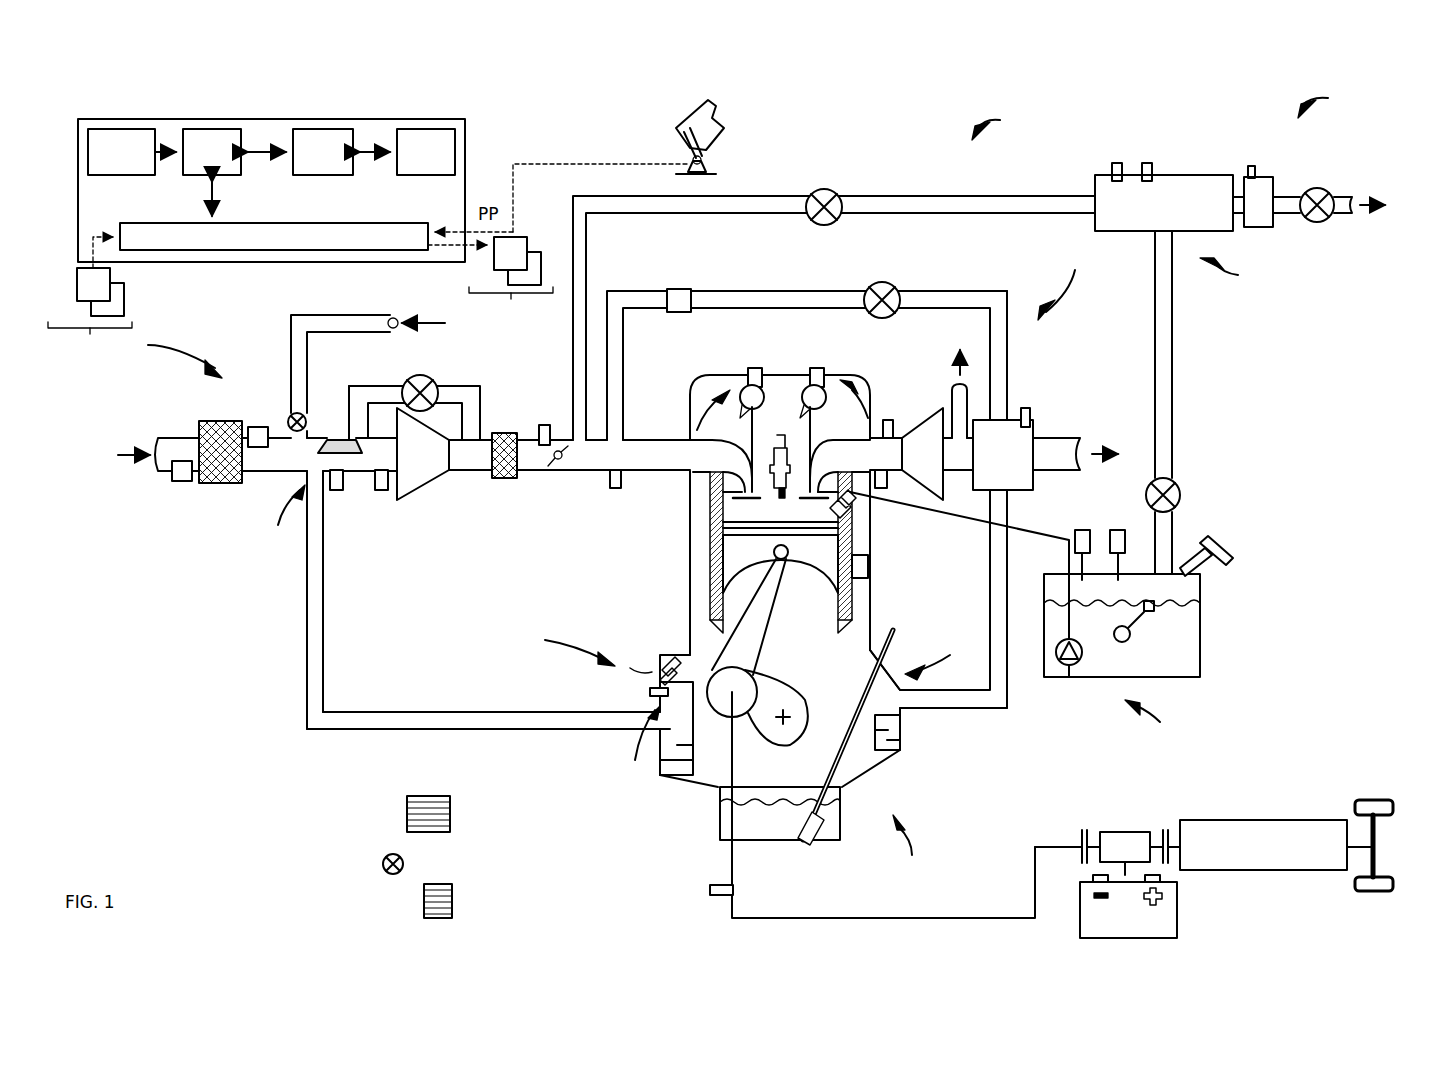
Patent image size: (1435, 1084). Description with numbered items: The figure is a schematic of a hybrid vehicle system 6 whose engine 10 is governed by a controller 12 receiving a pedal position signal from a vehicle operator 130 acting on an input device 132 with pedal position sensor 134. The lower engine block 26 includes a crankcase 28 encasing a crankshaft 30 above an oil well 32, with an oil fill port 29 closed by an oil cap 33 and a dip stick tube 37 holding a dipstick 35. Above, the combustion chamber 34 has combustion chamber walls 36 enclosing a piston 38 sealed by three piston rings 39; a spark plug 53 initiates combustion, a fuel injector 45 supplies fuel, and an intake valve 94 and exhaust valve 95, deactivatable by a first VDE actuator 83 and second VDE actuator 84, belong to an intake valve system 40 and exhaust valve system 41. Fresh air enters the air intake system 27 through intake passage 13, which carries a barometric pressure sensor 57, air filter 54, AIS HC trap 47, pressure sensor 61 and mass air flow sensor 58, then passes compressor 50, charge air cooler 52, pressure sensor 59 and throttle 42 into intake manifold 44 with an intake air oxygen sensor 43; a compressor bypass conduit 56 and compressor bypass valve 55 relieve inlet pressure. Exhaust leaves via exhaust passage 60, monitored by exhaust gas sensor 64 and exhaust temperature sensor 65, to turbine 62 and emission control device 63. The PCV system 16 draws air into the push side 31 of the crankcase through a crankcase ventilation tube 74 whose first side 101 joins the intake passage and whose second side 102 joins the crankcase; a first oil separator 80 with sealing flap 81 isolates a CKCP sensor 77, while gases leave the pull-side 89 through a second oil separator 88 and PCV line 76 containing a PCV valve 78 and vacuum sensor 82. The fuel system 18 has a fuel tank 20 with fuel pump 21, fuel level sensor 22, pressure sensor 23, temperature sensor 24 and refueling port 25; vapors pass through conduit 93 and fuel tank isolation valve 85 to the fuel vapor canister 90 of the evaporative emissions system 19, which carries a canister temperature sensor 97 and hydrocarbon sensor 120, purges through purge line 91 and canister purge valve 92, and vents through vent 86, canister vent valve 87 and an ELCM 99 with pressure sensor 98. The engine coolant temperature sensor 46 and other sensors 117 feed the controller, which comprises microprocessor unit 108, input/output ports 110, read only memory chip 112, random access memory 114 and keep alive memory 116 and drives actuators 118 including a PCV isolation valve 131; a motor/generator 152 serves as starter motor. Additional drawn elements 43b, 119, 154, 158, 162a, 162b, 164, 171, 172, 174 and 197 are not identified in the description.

The hybrid vehicle system 6 is at (1324, 101).
The engine 10 is at (1002, 126).
The controller 12 is at (458, 120).
The intake passage 13 is at (190, 438).
The positive crankcase ventilation system 16 is at (1062, 284).
The fuel system 18 is at (1156, 716).
The evaporative emissions system 19 is at (1231, 272).
The fuel tank 20 is at (1044, 670).
The fuel pump 21 is at (1080, 648).
The fuel level sensor 22 is at (1124, 642).
The pressure sensor 23 is at (1080, 530).
The temperature sensor 24 is at (1116, 530).
The refueling port 25 is at (1205, 578).
The engine block 26 is at (831, 832).
The air intake system 27 is at (185, 356).
The crankcase 28 is at (872, 768).
The oil fill port 29 is at (640, 659).
The crankshaft 30 is at (746, 682).
The push side 31 is at (617, 704).
The oil well 32 is at (778, 823).
The oil cap 33 is at (676, 656).
The combustion chamber 34 is at (700, 500).
The dipstick 35 is at (880, 655).
The combustion chamber walls 36 is at (855, 540).
The dip stick tube 37 is at (872, 690).
The piston 38 is at (710, 540).
The piston rings 39 is at (748, 520).
The intake valve system 40 is at (728, 426).
The exhaust valve system 41 is at (854, 385).
The throttle 42 is at (552, 462).
The intake air oxygen sensor 43 is at (590, 490).
The pressure sensor 43b is at (337, 490).
The intake manifold 44 is at (640, 475).
The fuel injector 45 is at (860, 505).
The engine coolant temperature sensor 46 is at (868, 570).
The air intake system hydrocarbon trap 47 is at (345, 438).
The compressor 50 is at (444, 454).
The charge air cooler 52 is at (505, 478).
The spark plug 53 is at (790, 430).
The air filter 54 is at (214, 421).
The compressor bypass valve 55 is at (418, 376).
The compressor bypass conduit 56 is at (455, 390).
The barometric pressure sensor 57 is at (182, 481).
The mass air flow sensor 58 is at (258, 427).
The pressure sensor 59 is at (545, 425).
The exhaust passage 60 is at (886, 420).
The pressure sensor 61 is at (382, 490).
The turbine 62 is at (937, 454).
The emission control device 63 is at (1063, 453).
The exhaust gas sensor 64 is at (898, 438).
The exhaust temperature sensor 65 is at (882, 488).
The crankcase ventilation tube 74 is at (550, 732).
The PCV line 76 is at (790, 308).
The CKCP sensor 77 is at (650, 692).
The PCV valve 78 is at (884, 282).
The first oil separator 80 is at (693, 728).
The sealing flap 81 is at (680, 762).
The vacuum sensor 82 is at (678, 312).
The first VDE actuator 83 is at (755, 368).
The second VDE actuator 84 is at (814, 368).
The fuel tank isolation valve 85 is at (1178, 488).
The vent 86 is at (1280, 197).
The canister vent valve 87 is at (1322, 188).
The second oil separator 88 is at (875, 722).
The pull-side 89 is at (938, 656).
The fuel vapor canister 90 is at (1164, 203).
The purge line 91 is at (998, 196).
The canister purge valve 92 is at (830, 190).
The conduit 93 is at (1172, 315).
The intake valve 94 is at (748, 460).
The exhaust valve 95 is at (812, 460).
The canister temperature sensor 97 is at (1117, 163).
The pressure sensor 98 is at (1252, 166).
The evaporative level check module 99 is at (1253, 202).
The first side 101 is at (292, 600).
The second side 102 is at (669, 742).
The microprocessor unit 108 is at (200, 129).
The input/output ports 110 is at (308, 223).
The read only memory chip 112 is at (110, 129).
The random access memory 114 is at (305, 129).
The keep alive memory 116 is at (410, 129).
The sensors 117 is at (90, 324).
The actuators 118 is at (511, 293).
The exhaust sensor 119 is at (1026, 408).
The hydrocarbon sensor 120 is at (1148, 163).
The vehicle operator 130 is at (722, 128).
The PCV isolation valve 131 is at (385, 857).
The input device 132 is at (686, 135).
The pedal position sensor 134 is at (705, 163).
The motor/generator 152 is at (1118, 832).
The transmission 154 is at (1305, 870).
The battery 158 is at (1177, 912).
The passage outlet 162a is at (955, 386).
The passage inlet 162b is at (291, 365).
The passage valve 164 is at (290, 416).
The wheels 171 is at (1378, 891).
The clutch 172 is at (1082, 830).
The crankshaft output 174 is at (732, 868).
The speed sensor 197 is at (710, 890).